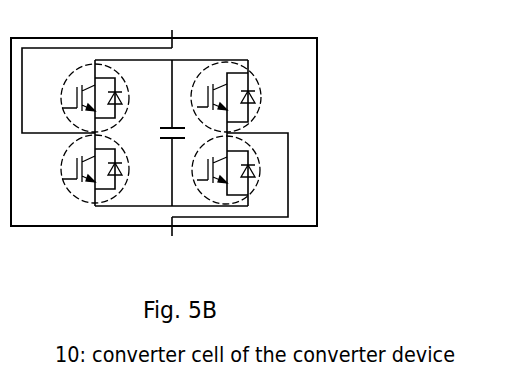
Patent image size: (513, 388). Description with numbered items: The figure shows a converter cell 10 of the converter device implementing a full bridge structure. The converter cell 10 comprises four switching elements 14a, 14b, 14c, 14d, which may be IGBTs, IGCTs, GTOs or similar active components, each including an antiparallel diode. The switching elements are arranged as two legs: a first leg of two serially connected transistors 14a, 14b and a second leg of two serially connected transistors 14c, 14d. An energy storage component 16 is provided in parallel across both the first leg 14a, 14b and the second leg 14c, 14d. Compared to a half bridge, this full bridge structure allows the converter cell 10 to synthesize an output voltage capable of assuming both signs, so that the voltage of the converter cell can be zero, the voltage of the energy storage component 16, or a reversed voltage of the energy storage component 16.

The converter cell 10 is at (113, 37).
The switching element 14a is at (70, 74).
The switching element 14b is at (127, 182).
The switching element 14c is at (262, 107).
The switching element 14d is at (261, 174).
The energy storage component 16 is at (167, 123).